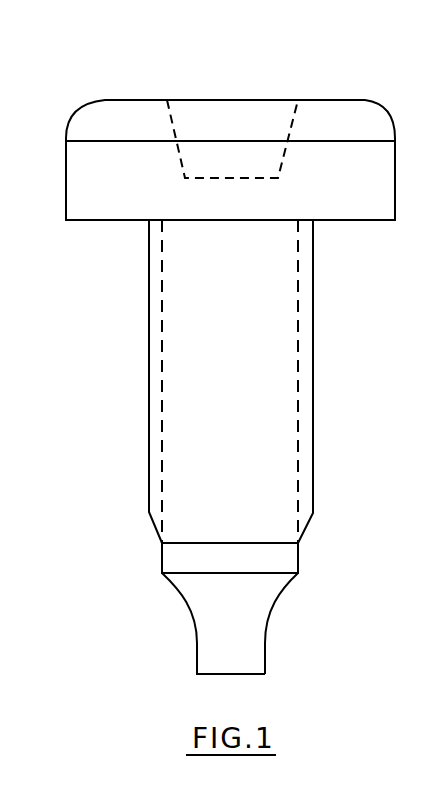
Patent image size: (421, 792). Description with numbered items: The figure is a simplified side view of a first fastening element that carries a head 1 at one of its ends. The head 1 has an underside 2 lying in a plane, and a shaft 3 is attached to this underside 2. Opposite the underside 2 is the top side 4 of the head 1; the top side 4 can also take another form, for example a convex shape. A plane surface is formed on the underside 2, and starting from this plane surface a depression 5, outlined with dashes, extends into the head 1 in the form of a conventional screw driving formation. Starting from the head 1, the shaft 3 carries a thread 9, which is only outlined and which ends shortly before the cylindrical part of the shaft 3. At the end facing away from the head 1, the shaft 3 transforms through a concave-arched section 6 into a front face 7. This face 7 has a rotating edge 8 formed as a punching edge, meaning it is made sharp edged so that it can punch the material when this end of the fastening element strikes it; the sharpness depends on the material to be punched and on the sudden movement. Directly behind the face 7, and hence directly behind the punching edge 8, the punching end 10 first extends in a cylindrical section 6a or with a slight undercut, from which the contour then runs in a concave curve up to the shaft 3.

The head 1 is at (93, 187).
The underside 2 is at (330, 220).
The shaft 3 is at (210, 288).
The top side 4 is at (325, 100).
The depression 5 is at (222, 125).
The concave-arched section 6 is at (285, 592).
The cylindrical section 6a is at (265, 660).
The front face 7 is at (238, 678).
The rotating edge 8 is at (197, 676).
The thread 9 is at (308, 394).
The punching end 10 is at (166, 605).